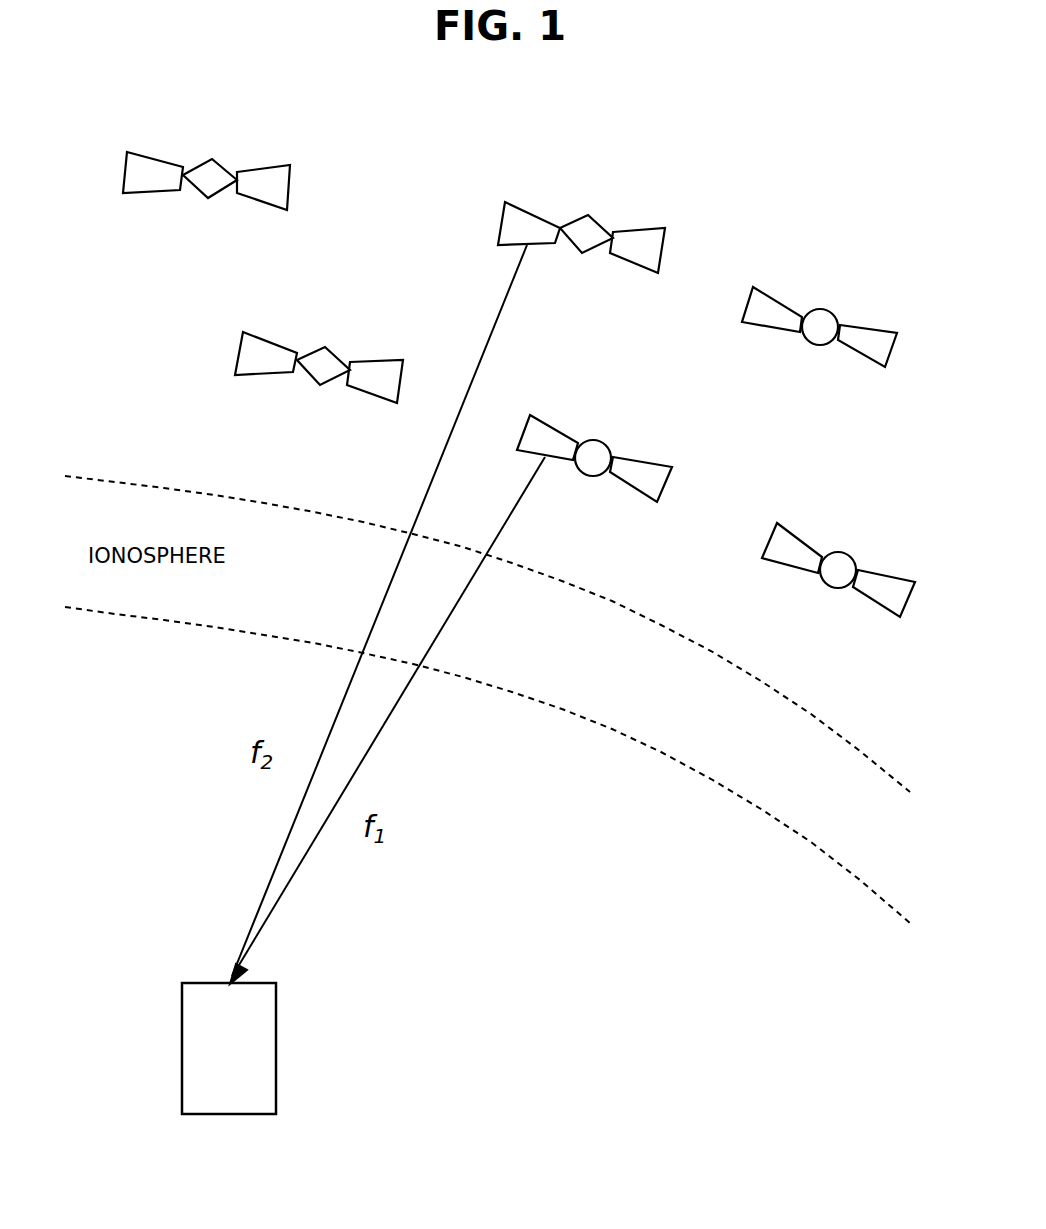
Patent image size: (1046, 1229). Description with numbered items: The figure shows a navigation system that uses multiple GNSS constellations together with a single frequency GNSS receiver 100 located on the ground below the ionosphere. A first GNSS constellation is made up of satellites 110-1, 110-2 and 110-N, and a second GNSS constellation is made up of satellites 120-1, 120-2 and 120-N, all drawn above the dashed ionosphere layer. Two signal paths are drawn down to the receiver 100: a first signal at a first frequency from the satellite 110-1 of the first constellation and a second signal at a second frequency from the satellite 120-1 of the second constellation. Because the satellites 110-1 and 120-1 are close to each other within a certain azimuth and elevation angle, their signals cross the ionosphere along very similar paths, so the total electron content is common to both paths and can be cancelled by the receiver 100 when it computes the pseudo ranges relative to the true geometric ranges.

The single frequency GNSS receiver 100 is at (276, 1022).
The satellite of first GNSS constellation 110-1 is at (555, 425).
The satellite of first GNSS constellation 110-2 is at (762, 292).
The satellite of first GNSS constellation 110-N is at (798, 535).
The satellite of second GNSS constellation 120-1 is at (500, 200).
The satellite of second GNSS constellation 120-2 is at (238, 348).
The satellite of second GNSS constellation 120-N is at (123, 180).